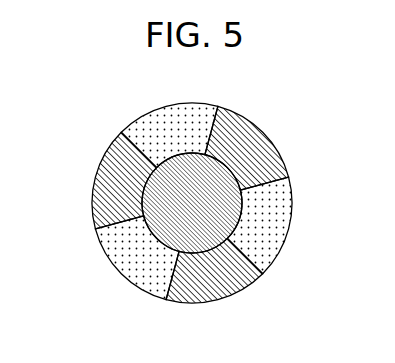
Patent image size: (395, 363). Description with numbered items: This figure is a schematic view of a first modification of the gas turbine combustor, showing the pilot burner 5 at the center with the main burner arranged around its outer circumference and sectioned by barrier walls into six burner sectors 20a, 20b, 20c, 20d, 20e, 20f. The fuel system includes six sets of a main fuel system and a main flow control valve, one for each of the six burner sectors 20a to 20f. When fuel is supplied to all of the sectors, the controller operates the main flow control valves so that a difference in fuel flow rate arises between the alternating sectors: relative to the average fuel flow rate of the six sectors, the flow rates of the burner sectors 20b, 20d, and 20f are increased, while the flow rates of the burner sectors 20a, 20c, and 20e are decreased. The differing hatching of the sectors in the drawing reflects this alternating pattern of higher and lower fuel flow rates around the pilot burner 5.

The pilot burner 5 is at (241, 203).
The burner sector 20a is at (157, 110).
The burner sector 20b is at (263, 135).
The burner sector 20c is at (280, 233).
The burner sector 20d is at (223, 300).
The burner sector 20e is at (122, 277).
The burner sector 20f is at (98, 175).